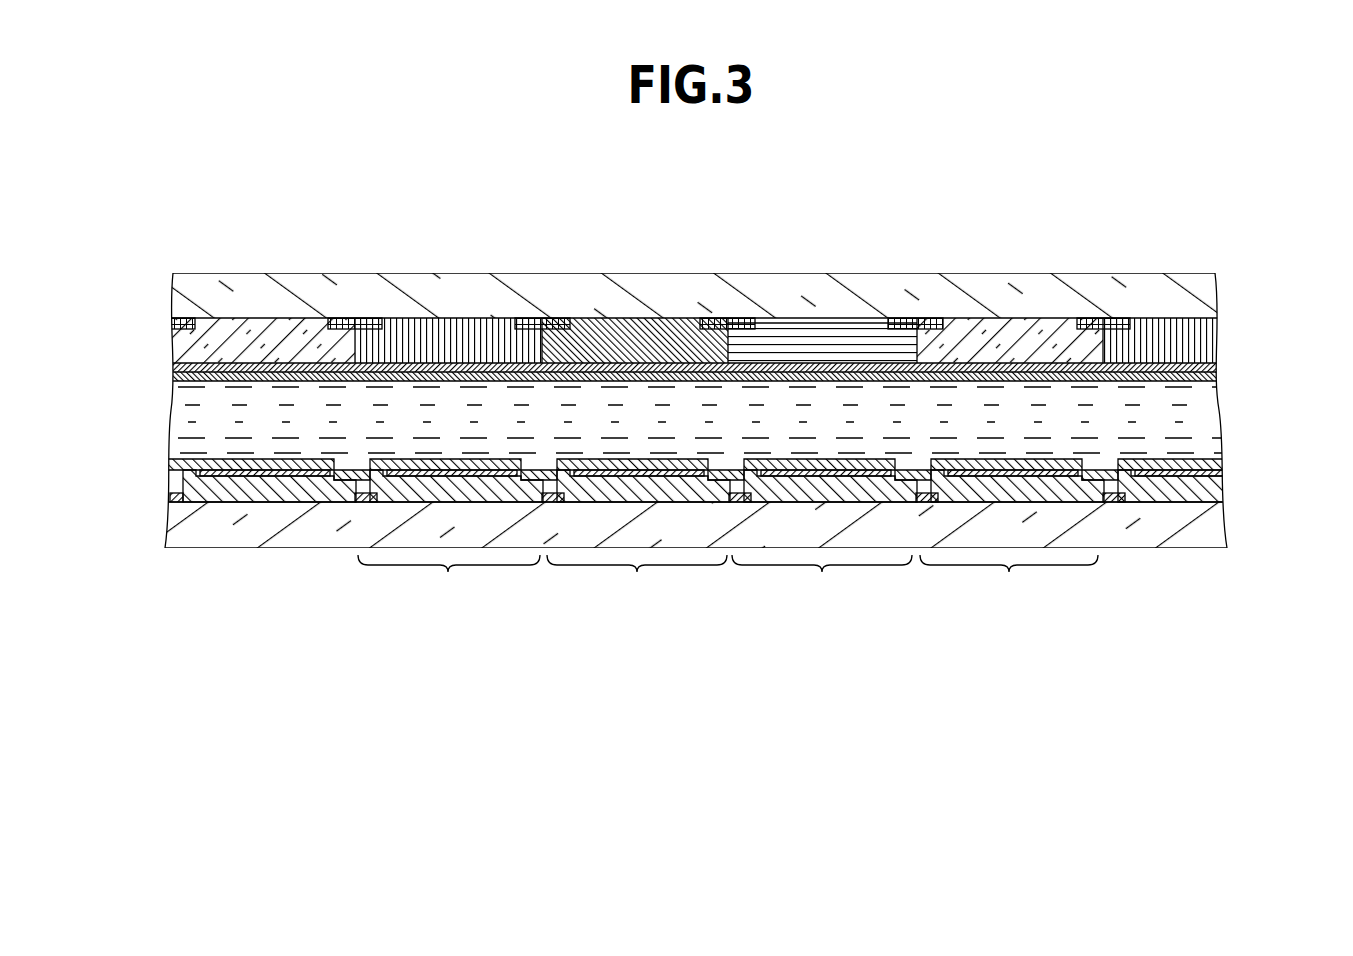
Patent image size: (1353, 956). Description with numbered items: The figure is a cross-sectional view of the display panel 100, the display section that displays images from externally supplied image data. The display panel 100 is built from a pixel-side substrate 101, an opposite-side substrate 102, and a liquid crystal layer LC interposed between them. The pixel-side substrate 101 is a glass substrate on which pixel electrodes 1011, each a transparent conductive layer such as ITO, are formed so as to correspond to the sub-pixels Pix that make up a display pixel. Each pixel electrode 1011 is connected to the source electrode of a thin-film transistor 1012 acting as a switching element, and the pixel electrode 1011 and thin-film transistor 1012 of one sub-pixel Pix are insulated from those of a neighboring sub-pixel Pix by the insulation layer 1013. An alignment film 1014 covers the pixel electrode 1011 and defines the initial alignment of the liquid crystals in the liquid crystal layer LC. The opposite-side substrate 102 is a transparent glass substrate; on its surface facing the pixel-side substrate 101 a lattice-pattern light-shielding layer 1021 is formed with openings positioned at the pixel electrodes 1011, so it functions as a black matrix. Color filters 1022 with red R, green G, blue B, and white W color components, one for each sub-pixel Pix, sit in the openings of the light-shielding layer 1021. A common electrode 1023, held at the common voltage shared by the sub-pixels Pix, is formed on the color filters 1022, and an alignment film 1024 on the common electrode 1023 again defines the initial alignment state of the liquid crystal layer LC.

The display panel 100 is at (1290, 212).
The pixel-side substrate 101 is at (1180, 527).
The opposite-side substrate 102 is at (1197, 298).
The pixel electrode 1011 is at (230, 470).
The thin-film transistor 1012 is at (362, 502).
The insulation layer 1013 is at (270, 495).
The alignment film 1014 is at (188, 468).
The light-shielding layer 1021 is at (701, 288).
The color filters 1022 is at (503, 322).
The common electrode 1023 is at (1222, 372).
The alignment film 1024 is at (1222, 385).
The liquid crystal layer LC is at (188, 412).
The white color component W is at (257, 345).
The red color component R is at (448, 345).
The green color component G is at (640, 345).
The blue color component B is at (818, 345).
The sub-pixel Pix is at (728, 576).